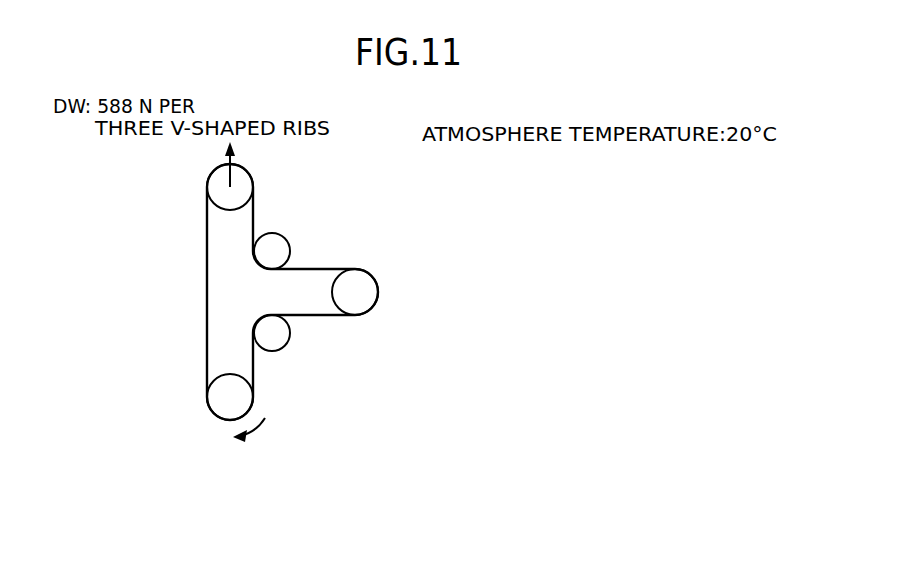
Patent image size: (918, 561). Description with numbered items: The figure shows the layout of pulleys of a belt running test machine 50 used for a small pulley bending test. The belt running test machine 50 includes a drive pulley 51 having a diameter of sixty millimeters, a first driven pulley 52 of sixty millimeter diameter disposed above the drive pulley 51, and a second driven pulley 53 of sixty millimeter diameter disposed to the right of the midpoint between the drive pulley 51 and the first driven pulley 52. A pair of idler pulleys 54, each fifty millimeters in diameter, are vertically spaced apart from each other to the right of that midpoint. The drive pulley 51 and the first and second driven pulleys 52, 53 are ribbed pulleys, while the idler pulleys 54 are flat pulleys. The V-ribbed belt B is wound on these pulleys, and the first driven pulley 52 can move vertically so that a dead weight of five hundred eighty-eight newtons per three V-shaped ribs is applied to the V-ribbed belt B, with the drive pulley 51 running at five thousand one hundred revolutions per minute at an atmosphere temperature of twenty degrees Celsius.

The belt running test machine 50 is at (358, 182).
The drive pulley 51 is at (218, 400).
The first driven pulley 52 is at (218, 183).
The second driven pulley 53 is at (365, 290).
The idler pulleys 54 is at (272, 240).
The V-ribbed belt B is at (208, 274).